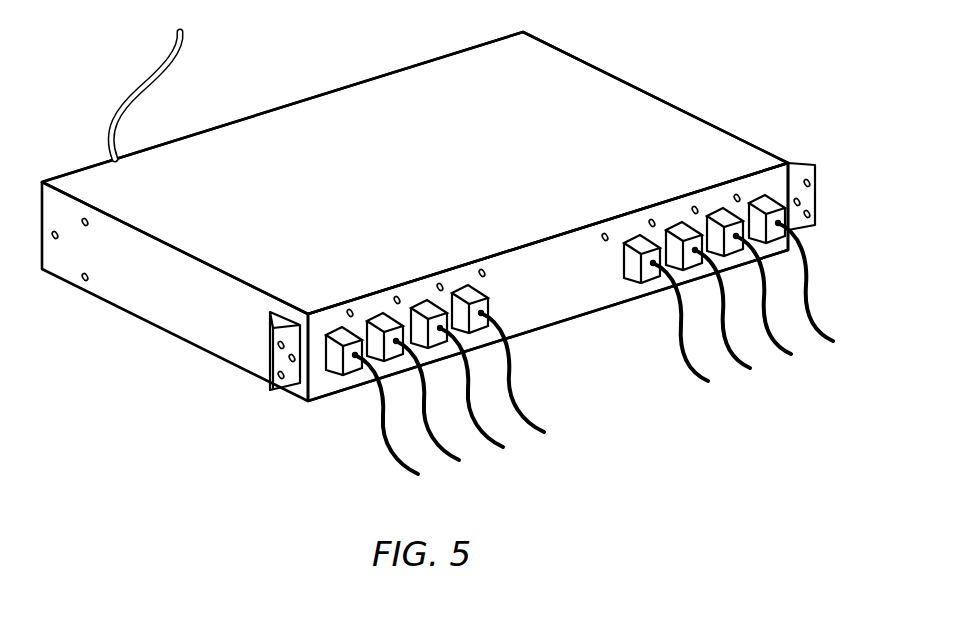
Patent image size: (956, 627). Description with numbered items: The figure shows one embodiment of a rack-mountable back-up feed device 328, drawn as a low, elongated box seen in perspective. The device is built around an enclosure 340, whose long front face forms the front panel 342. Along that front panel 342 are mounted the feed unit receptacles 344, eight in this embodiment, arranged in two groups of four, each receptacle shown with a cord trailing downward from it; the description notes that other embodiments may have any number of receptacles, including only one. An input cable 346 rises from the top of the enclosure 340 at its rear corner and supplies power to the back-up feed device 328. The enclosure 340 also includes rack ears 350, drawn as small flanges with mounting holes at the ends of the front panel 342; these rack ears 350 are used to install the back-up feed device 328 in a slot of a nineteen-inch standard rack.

The back-up feed device 328 is at (177, 387).
The enclosure 340 is at (429, 185).
The front panel 342 is at (574, 289).
The feed unit receptacles 344 is at (342, 377).
The input cable 346 is at (107, 124).
The rack ears 350 is at (817, 190).